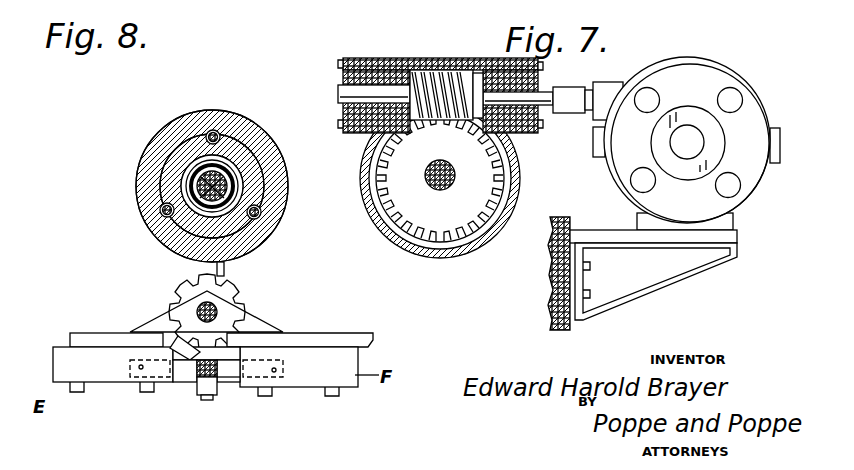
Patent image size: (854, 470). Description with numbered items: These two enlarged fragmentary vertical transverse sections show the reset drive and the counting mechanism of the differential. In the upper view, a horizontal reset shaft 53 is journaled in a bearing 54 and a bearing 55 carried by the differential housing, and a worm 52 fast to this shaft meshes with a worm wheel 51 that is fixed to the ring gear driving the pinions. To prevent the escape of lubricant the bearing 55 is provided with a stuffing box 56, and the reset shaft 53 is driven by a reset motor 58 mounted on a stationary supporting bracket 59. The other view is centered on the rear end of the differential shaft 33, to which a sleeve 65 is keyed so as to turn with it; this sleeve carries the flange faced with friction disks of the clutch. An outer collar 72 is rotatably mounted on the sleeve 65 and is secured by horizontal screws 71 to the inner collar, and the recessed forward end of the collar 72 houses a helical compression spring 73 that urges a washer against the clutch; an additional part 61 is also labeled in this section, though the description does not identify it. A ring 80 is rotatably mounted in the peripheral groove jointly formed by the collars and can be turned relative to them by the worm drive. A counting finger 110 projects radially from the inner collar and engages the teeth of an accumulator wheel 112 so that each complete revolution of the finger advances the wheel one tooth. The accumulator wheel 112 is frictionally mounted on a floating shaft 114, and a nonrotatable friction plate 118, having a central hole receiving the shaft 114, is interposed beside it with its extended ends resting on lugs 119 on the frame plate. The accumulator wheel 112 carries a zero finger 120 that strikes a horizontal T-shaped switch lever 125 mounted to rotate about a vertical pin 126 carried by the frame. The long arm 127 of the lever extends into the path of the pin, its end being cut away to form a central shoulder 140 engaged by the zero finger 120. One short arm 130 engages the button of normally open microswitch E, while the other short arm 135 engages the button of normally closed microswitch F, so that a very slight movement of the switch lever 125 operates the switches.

In FIG. 8, the ring 80 is at (226, 112).
In FIG. 8, the inner hub body 61 is at (238, 150).
In FIG. 8, the helical compression spring 73 is at (240, 176).
In FIG. 8, the sleeve 65 is at (190, 184).
In FIG. 8, the horizontal screws 71 is at (162, 210).
In FIG. 8, the differential shaft 33 is at (226, 194).
In FIG. 7, the differential shaft 33 is at (437, 190).
In FIG. 8, the outer collar 72 is at (262, 236).
In FIG. 8, the counting finger 110 is at (224, 275).
In FIG. 8, the accumulator wheel 112 is at (176, 286).
In FIG. 8, the shaft 114 is at (240, 298).
In FIG. 8, the friction plate 118 is at (263, 320).
In FIG. 8, the lugs 119 is at (70, 343).
In FIG. 8, the zero finger 120 is at (178, 336).
In FIG. 8, the central shoulder 140 is at (130, 362).
In FIG. 8, the short arm 130 is at (180, 375).
In FIG. 8, the short arm 135 is at (230, 372).
In FIG. 8, the vertical pin 126 is at (207, 378).
In FIG. 8, the switch lever 125 is at (194, 407).
In FIG. 8, the long arm 127 is at (230, 378).
In FIG. 7, the bearing 54 is at (350, 58).
In FIG. 7, the worm 52 is at (438, 70).
In FIG. 7, the worm wheel 51 is at (476, 73).
In FIG. 7, the reset shaft 53 is at (340, 90).
In FIG. 7, the bearing 55 is at (540, 130).
In FIG. 7, the stuffing box 56 is at (512, 122).
In FIG. 7, the reset motor 58 is at (717, 77).
In FIG. 7, the supporting bracket 59 is at (670, 278).